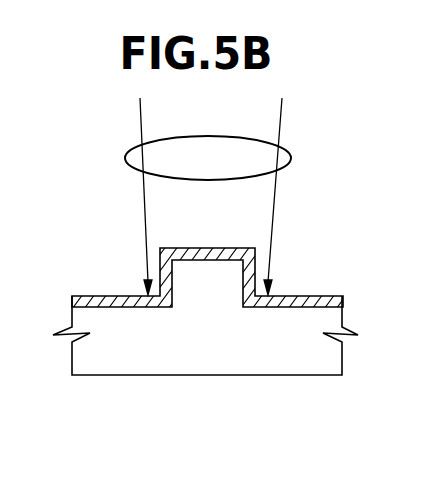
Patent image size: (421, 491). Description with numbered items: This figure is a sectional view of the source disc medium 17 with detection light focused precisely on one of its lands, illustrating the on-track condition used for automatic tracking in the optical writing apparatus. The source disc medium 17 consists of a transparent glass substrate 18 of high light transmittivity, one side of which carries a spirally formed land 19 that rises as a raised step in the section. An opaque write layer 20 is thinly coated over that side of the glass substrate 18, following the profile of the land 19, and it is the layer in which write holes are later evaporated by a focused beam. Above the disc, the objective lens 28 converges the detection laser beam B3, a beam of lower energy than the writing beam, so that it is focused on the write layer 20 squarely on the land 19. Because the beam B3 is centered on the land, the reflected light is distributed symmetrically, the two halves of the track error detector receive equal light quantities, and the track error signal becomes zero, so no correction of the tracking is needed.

The source disc medium 17 is at (343, 387).
The transparent glass substrate 18 is at (120, 360).
The land 19 is at (207, 290).
The write layer 20 is at (233, 247).
The objective lens 28 is at (290, 152).
The laser beam B3 is at (138, 205).